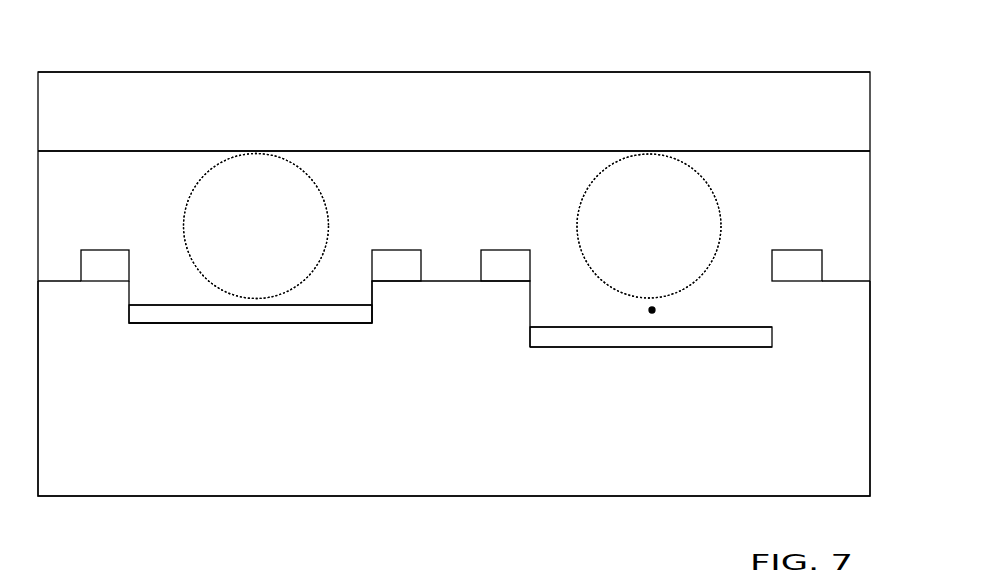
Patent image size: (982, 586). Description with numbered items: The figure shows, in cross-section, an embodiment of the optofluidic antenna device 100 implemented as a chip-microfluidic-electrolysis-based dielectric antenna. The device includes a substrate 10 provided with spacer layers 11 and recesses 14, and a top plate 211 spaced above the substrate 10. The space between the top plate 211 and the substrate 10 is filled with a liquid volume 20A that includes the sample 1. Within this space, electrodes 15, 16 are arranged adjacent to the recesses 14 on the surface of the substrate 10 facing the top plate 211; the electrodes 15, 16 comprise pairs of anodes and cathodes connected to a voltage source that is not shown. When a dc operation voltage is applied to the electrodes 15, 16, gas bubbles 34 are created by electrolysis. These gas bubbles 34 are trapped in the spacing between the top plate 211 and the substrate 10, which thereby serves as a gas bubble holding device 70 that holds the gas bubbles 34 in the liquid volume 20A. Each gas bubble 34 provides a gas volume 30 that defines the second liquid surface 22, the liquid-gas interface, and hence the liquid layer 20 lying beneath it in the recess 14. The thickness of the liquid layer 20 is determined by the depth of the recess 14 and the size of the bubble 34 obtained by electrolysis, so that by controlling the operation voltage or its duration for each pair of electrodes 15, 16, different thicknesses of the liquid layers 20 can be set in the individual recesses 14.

The optofluidic antenna device 100 is at (164, 30).
The top plate 211 is at (700, 87).
The gas bubble holding device 70 is at (462, 185).
The liquid volume 20A is at (507, 173).
The substrate 10 is at (153, 470).
The spacer layer 11 is at (172, 312).
The recess 14 is at (548, 298).
The second liquid surface 22 is at (247, 297).
The liquid layer 20 is at (260, 301).
The electrode 15 is at (100, 258).
The electrode 16 is at (396, 261).
The gas volume 30 is at (266, 240).
The gas bubble 34 is at (267, 165).
The sample 1 is at (655, 312).